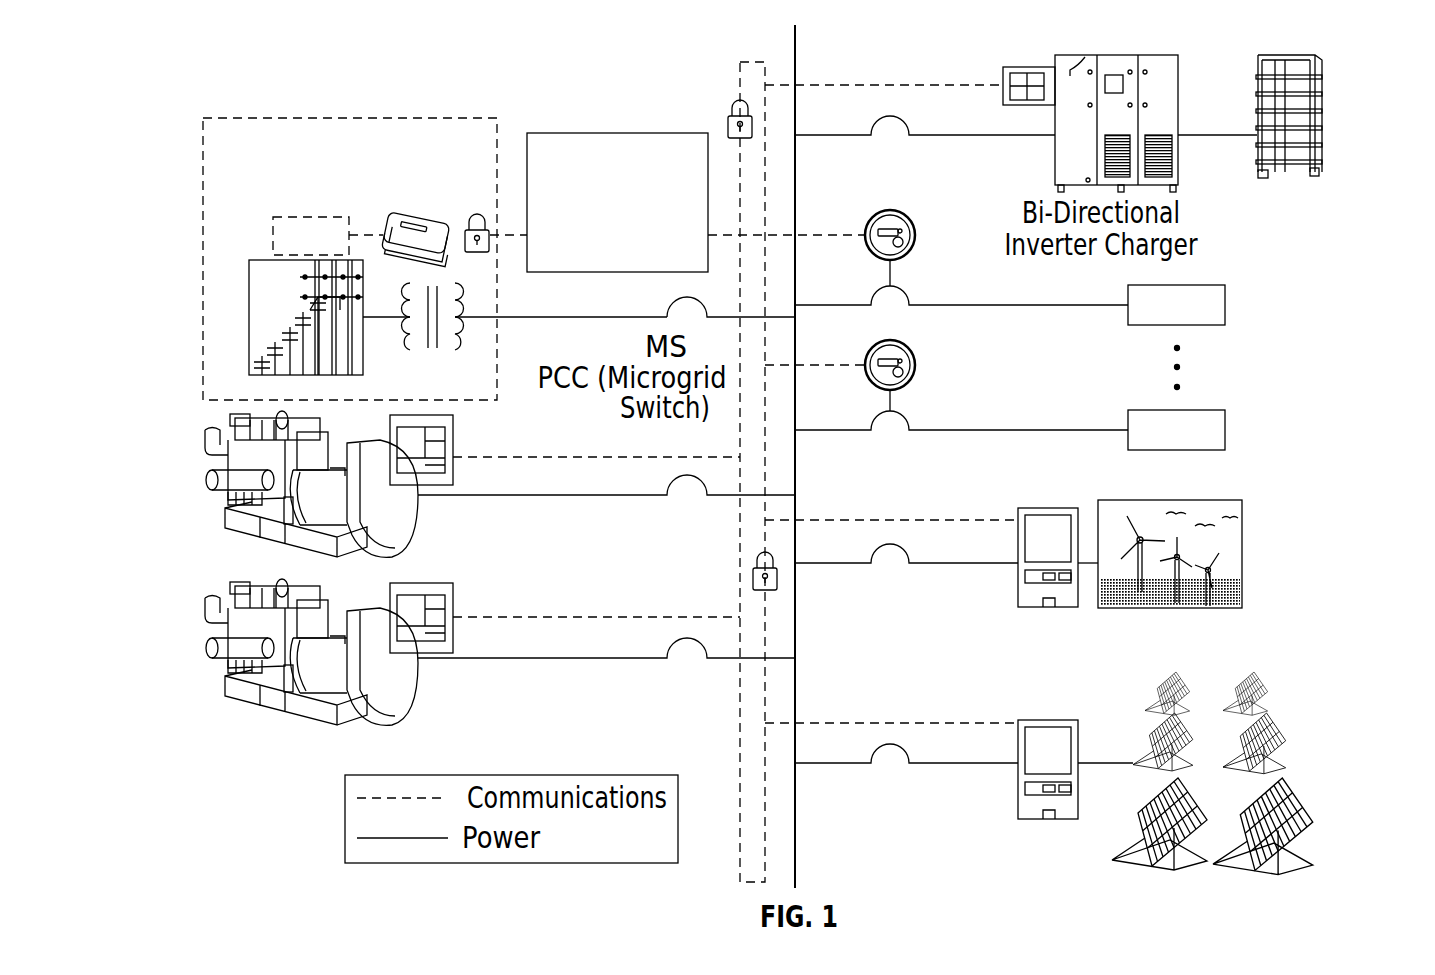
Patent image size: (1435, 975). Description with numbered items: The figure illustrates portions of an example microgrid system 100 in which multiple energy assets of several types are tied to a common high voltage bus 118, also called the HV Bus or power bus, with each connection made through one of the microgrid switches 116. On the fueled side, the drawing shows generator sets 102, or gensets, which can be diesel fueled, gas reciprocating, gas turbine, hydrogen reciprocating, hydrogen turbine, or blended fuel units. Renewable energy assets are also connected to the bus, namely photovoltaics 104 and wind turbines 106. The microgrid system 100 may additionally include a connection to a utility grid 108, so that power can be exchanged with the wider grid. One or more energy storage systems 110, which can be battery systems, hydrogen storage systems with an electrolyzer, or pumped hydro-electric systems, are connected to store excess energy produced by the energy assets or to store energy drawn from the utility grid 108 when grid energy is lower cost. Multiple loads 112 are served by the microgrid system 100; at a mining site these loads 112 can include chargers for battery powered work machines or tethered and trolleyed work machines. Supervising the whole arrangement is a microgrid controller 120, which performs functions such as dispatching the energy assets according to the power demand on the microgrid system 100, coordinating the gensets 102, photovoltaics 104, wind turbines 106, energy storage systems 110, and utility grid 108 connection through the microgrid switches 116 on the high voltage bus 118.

The microgrid system 100 is at (1151, 46).
The generator sets 102 is at (197, 420).
The photovoltaics 104 is at (1325, 667).
The wind turbines 106 is at (1267, 490).
The utility grid 108 is at (270, 118).
The energy storage system 110 is at (1347, 60).
The loads 112 is at (1245, 280).
The microgrid switches 116 is at (672, 306).
The high voltage bus 118 is at (795, 62).
The microgrid controller 120 is at (588, 133).